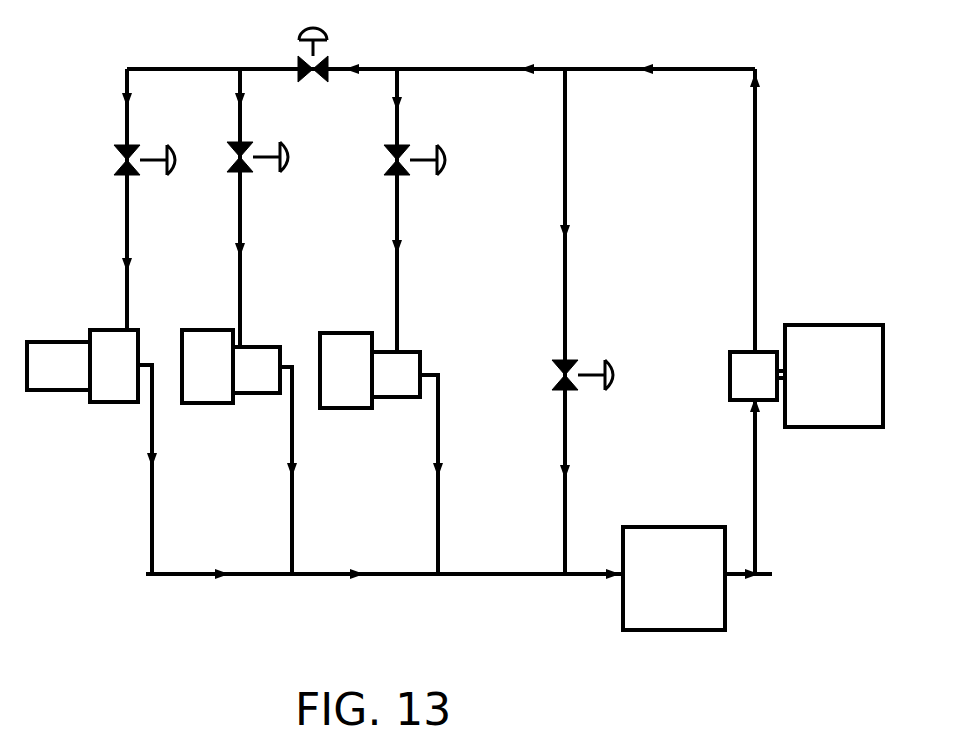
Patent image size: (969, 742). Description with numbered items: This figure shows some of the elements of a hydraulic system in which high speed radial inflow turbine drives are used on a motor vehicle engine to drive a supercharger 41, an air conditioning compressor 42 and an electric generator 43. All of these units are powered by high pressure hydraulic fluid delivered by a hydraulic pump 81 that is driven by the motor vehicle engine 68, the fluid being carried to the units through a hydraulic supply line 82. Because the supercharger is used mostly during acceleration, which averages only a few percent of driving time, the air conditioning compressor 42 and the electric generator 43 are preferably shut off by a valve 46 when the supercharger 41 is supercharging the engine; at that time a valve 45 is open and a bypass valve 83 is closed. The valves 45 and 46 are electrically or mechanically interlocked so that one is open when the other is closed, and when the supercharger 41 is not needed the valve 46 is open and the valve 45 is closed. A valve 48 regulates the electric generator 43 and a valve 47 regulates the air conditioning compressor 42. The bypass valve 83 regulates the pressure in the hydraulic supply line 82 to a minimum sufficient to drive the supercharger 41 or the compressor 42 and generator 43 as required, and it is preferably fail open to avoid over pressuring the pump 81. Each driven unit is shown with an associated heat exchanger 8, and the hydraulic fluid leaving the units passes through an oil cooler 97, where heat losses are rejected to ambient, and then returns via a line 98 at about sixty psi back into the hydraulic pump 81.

The heat exchanger 8 is at (118, 402).
The supercharger 41 is at (350, 408).
The air conditioning compressor 42 is at (210, 403).
The electric generator 43 is at (60, 390).
The valve 45 is at (402, 144).
The valve 46 is at (330, 63).
The valve 47 is at (246, 138).
The valve 48 is at (112, 155).
The motor vehicle engine 68 is at (813, 427).
The hydraulic pump 81 is at (730, 375).
The hydraulic supply line 82 is at (702, 64).
The bypass valve 83 is at (604, 368).
The oil cooler 97 is at (725, 601).
The line 98 is at (770, 516).